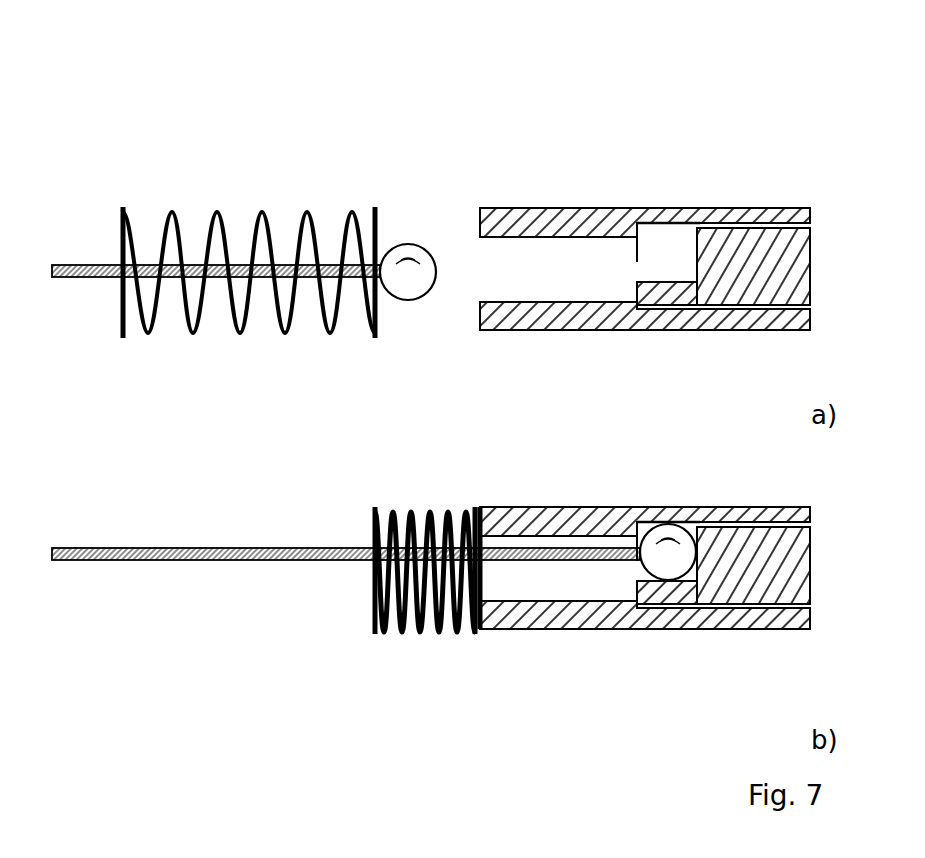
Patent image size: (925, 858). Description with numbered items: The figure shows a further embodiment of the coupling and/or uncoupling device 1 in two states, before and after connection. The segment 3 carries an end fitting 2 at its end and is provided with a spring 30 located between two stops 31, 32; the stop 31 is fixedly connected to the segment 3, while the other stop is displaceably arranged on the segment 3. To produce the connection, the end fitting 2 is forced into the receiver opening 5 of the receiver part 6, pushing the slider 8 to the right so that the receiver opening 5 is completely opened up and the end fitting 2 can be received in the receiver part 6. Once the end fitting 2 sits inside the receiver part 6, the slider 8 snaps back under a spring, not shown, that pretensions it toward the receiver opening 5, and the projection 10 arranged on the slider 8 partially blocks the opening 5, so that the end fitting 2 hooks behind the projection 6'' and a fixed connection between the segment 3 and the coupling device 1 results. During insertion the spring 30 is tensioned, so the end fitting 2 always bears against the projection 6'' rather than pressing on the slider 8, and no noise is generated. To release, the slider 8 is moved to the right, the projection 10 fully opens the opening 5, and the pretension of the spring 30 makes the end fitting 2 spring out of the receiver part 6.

The coupling and/or uncoupling device 1 is at (544, 124).
The end fitting 2 is at (413, 262).
The segment 3 is at (93, 266).
The receiver opening 5 is at (638, 262).
The receiver part 6 is at (651, 404).
The projection 6'' is at (700, 327).
The slider 8 is at (742, 250).
The projection 10 is at (683, 292).
The spring 30 is at (216, 262).
The stop 31 is at (124, 207).
The stop 32 is at (375, 206).